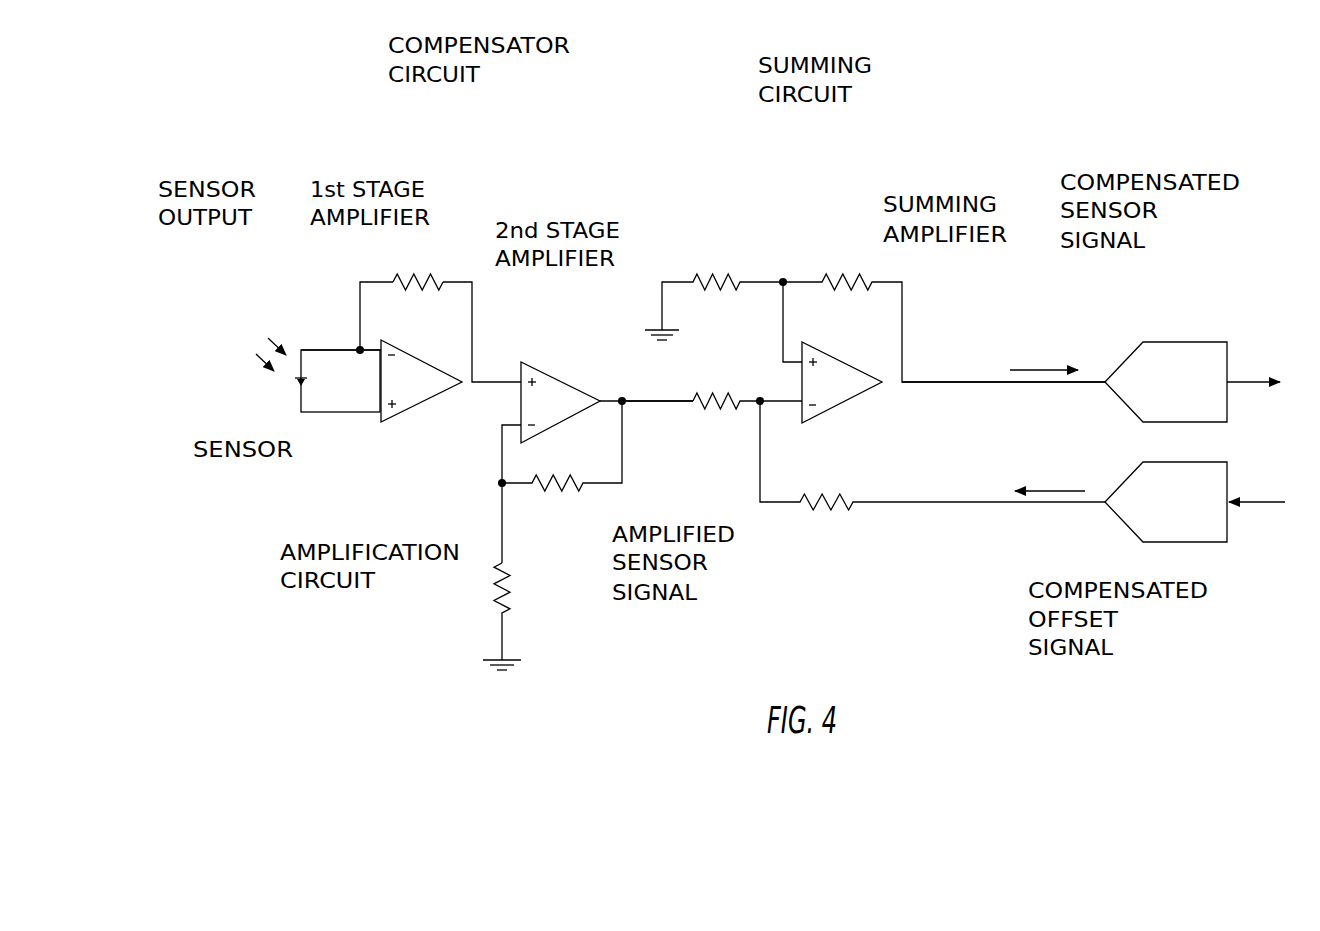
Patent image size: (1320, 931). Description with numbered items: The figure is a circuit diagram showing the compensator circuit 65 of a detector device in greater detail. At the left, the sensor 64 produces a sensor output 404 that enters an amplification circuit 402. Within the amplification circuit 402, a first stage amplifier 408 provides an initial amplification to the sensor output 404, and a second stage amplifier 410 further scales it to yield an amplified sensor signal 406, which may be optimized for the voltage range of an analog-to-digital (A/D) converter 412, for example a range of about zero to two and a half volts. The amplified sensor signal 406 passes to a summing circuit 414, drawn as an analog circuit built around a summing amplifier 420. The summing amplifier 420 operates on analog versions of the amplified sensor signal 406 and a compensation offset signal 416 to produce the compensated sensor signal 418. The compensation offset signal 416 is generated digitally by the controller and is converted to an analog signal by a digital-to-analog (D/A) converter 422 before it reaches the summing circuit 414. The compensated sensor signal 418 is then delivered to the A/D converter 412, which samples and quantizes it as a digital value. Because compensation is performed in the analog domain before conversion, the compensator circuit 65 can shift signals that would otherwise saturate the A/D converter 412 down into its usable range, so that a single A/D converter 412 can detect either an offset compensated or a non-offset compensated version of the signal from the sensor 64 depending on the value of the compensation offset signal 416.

The sensor 64 is at (298, 383).
The compensator circuit 65 is at (586, 190).
The amplification circuit 402 is at (446, 470).
The sensor output 404 is at (335, 350).
The amplified sensor signal 406 is at (645, 403).
The first stage amplifier 408 is at (412, 388).
The second stage amplifier 410 is at (553, 388).
The analog-to-digital (A/D) converter 412 is at (1228, 348).
The summing circuit 414 is at (875, 279).
The compensation offset signal 416 is at (1048, 505).
The compensated sensor signal 418 is at (1030, 380).
The summing amplifier 420 is at (830, 380).
The digital-to-analog (D/A) converter 422 is at (1228, 522).